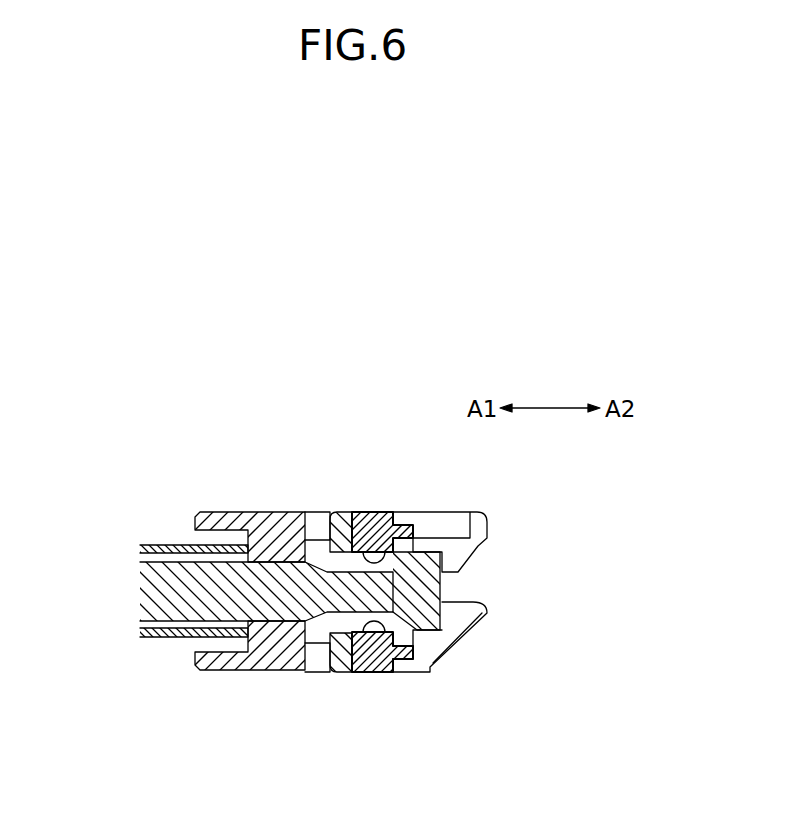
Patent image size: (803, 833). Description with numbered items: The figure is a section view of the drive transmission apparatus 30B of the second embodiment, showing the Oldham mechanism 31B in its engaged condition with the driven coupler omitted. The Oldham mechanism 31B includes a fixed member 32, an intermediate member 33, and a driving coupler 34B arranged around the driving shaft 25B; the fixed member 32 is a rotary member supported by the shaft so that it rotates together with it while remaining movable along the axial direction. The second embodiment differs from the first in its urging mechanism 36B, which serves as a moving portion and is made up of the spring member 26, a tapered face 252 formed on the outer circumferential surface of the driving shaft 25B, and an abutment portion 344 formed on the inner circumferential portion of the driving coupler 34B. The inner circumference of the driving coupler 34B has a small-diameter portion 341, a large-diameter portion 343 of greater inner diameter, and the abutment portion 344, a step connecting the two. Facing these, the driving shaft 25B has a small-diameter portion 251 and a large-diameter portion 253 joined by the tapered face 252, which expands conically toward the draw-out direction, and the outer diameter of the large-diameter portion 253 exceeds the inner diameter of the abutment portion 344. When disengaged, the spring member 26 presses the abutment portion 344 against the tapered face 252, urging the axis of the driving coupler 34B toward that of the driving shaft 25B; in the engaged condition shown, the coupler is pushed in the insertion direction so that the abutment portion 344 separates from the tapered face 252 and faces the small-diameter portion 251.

The drive transmission apparatus 30B is at (339, 404).
The Oldham mechanism 31B is at (220, 494).
The urging mechanism 36B is at (151, 537).
The driving shaft 25B is at (147, 585).
The spring member 26 is at (163, 640).
The fixed member 32 is at (262, 672).
The intermediate member 33 is at (340, 675).
The driving coupler 34B is at (367, 677).
The small-diameter portion 341 is at (371, 552).
The abutment portion 344 is at (415, 545).
The large-diameter portion 343 is at (458, 558).
The small-diameter portion 251 is at (377, 634).
The tapered face 252 is at (405, 657).
The large-diameter portion 253 is at (440, 662).